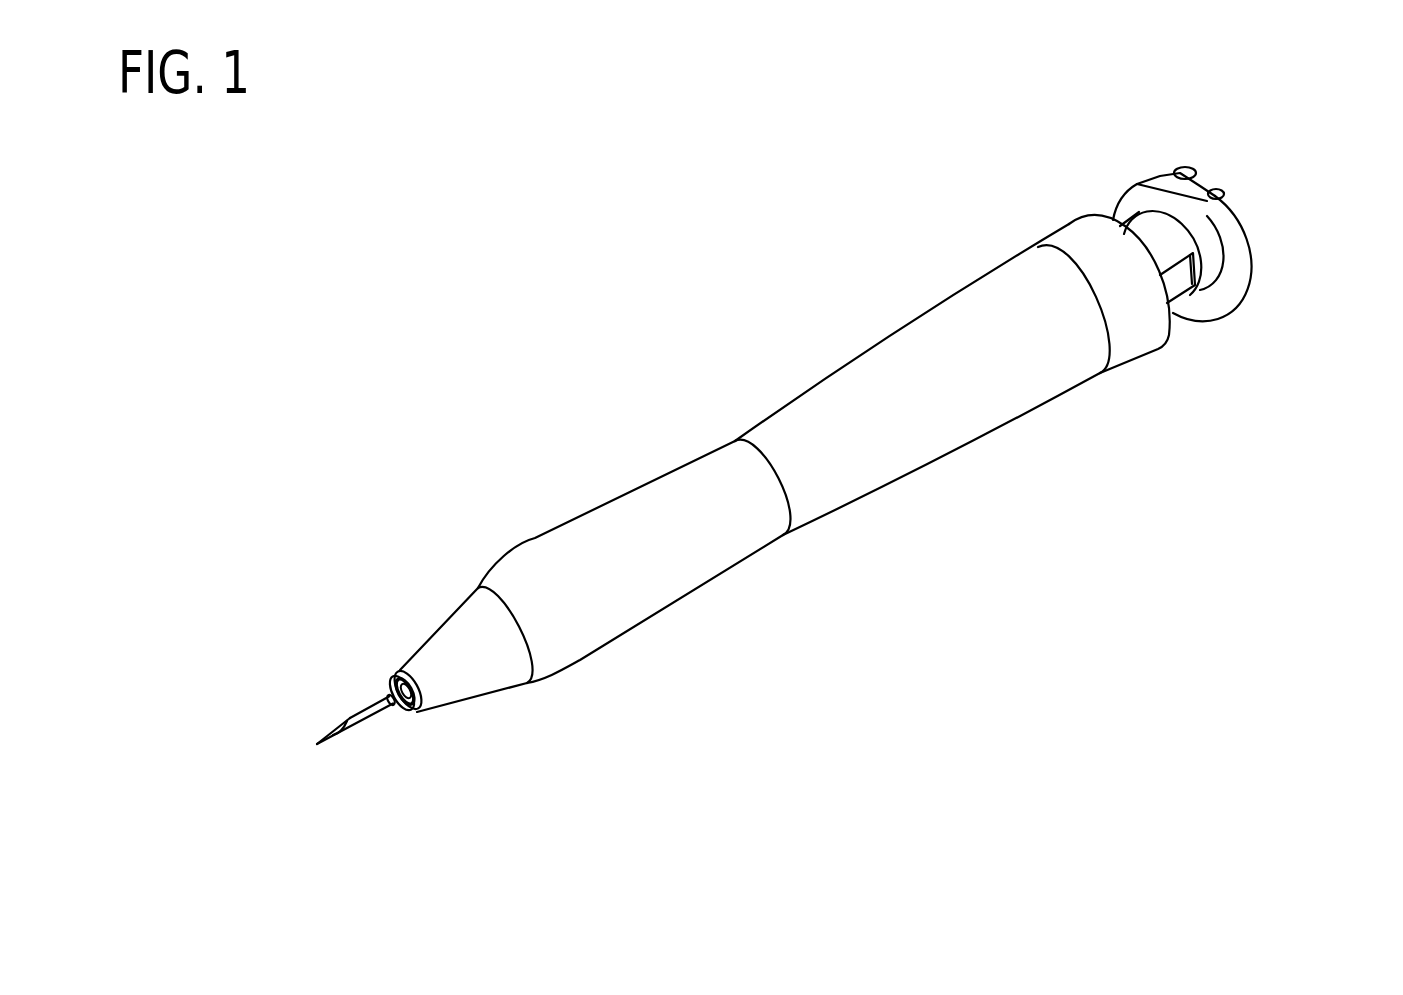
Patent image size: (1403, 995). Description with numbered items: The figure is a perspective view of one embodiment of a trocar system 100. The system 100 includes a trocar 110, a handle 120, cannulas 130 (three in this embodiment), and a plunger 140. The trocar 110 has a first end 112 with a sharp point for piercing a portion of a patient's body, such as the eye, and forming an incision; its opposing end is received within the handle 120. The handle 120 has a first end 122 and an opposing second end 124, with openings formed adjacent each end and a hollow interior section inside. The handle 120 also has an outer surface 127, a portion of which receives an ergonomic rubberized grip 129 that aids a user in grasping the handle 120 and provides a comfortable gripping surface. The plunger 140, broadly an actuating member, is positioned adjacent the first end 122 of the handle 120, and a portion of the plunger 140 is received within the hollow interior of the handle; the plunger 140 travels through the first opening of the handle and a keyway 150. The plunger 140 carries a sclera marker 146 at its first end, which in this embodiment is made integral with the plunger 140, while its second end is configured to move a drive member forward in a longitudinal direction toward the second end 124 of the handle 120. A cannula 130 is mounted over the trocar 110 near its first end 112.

The trocar system 100 is at (573, 352).
The trocar 110 is at (358, 707).
The first end 112 is at (320, 741).
The handle 120 is at (776, 410).
The first end 122 is at (1067, 258).
The second end 124 is at (407, 712).
The outer surface 127 is at (875, 378).
The ergonomic rubberized grip 129 is at (573, 548).
The cannula 130 is at (381, 682).
The plunger 140 is at (1252, 242).
The sclera marker 146 is at (1216, 184).
The keyway 150 is at (1078, 233).